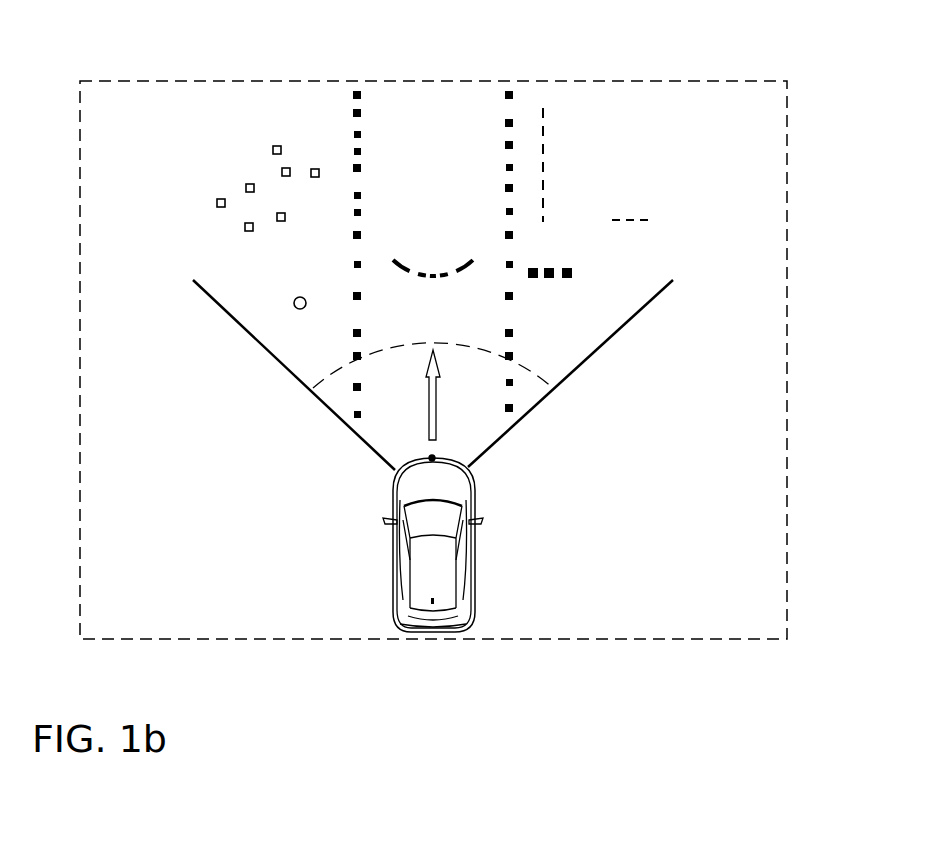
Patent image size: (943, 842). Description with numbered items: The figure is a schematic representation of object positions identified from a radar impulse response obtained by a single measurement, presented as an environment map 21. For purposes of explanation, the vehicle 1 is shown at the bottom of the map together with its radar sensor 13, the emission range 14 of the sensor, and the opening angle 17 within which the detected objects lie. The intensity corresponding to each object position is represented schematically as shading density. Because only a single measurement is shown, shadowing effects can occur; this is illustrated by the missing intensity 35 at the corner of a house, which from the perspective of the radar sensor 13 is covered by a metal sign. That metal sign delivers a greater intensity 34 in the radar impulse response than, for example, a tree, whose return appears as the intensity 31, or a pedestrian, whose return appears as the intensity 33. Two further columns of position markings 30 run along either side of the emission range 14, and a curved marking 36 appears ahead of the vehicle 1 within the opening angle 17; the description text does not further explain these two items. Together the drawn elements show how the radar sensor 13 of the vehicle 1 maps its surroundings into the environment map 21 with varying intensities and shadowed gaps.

The vehicle 1 is at (443, 590).
The radar sensor 13 is at (432, 458).
The emission region 14 is at (585, 362).
The opening angle 17 is at (403, 347).
The environment map 21 is at (158, 80).
The lane boundary markings 30 is at (512, 118).
The intensity 31 is at (263, 173).
The intensity 33 is at (294, 309).
The intensity 34 is at (571, 272).
The missing intensity 35 is at (596, 165).
The curved obstacle 36 is at (433, 275).